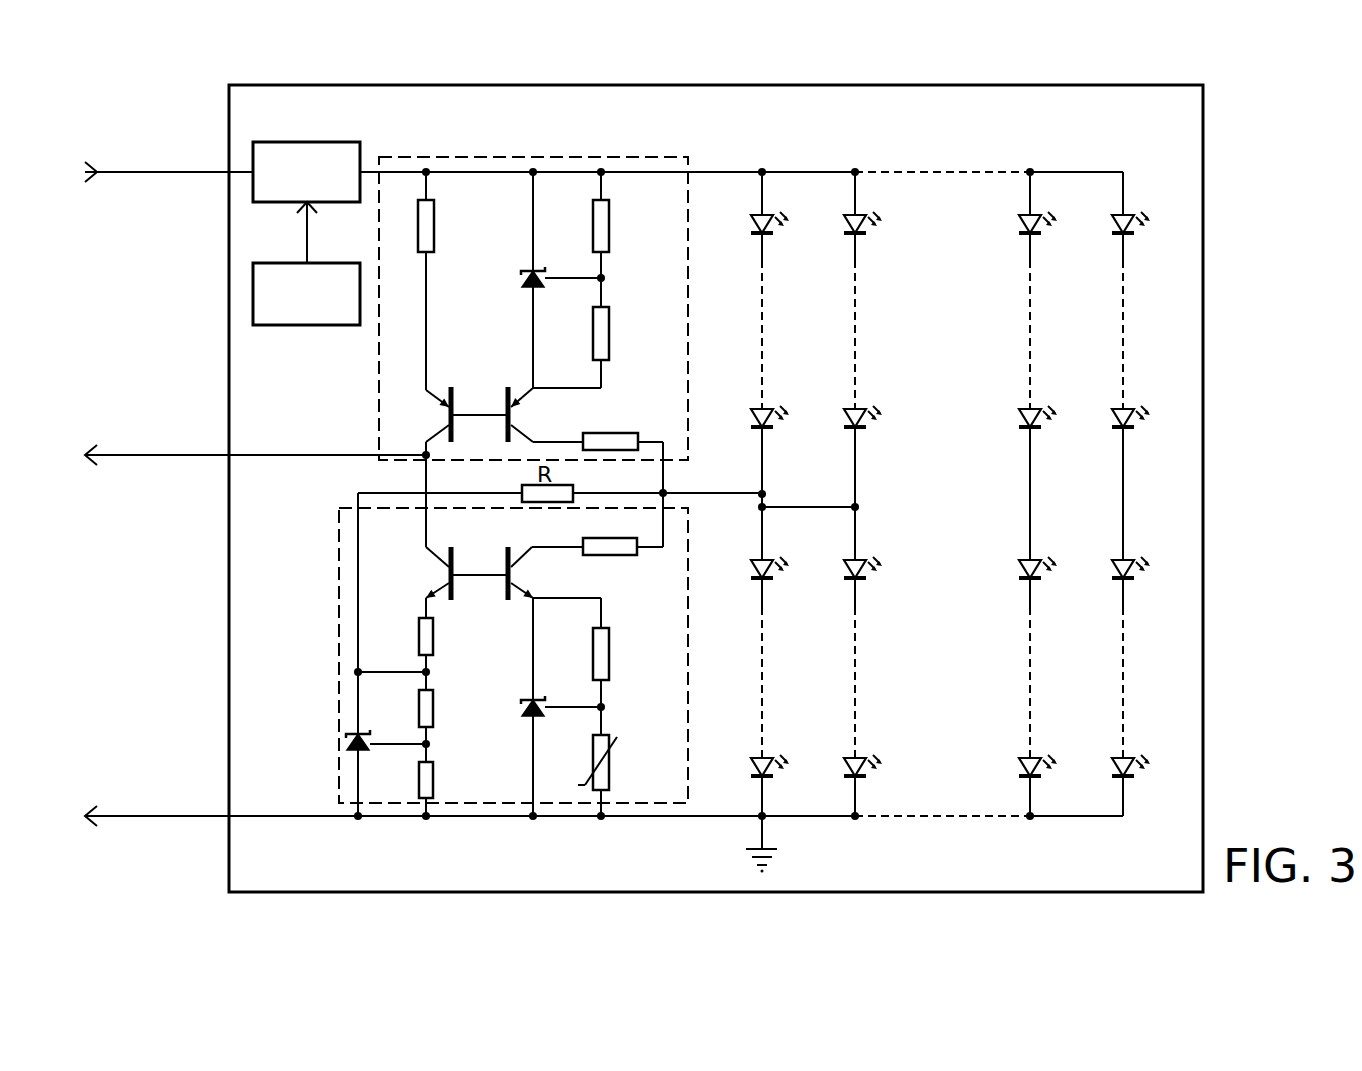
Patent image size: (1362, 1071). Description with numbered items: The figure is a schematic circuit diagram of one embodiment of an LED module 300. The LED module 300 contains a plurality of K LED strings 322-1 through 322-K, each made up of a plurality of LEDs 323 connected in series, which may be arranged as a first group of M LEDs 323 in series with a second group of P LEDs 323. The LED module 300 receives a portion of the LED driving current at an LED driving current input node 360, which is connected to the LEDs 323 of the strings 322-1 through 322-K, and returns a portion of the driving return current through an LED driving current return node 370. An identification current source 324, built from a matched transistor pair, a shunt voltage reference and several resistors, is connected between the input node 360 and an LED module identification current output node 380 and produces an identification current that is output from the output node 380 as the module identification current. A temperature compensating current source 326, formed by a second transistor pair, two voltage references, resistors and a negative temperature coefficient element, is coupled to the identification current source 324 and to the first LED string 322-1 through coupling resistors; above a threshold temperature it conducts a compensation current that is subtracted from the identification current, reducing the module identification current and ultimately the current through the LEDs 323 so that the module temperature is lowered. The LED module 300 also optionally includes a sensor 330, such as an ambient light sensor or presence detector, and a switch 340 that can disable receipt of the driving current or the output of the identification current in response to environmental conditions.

The LED module 300 is at (1280, 173).
The first LED string 322-1 is at (797, 500).
The K-th LED string 322-K is at (1027, 462).
The LED 323 is at (966, 500).
The identification current source 324 is at (535, 157).
The temperature compensating current source 326 is at (477, 803).
The sensor 330 is at (308, 325).
The switch 340 is at (308, 142).
The LED driving current input node 360 is at (169, 185).
The LED driving current return node 370 is at (604, 829).
The LED module identification current output node 380 is at (255, 459).